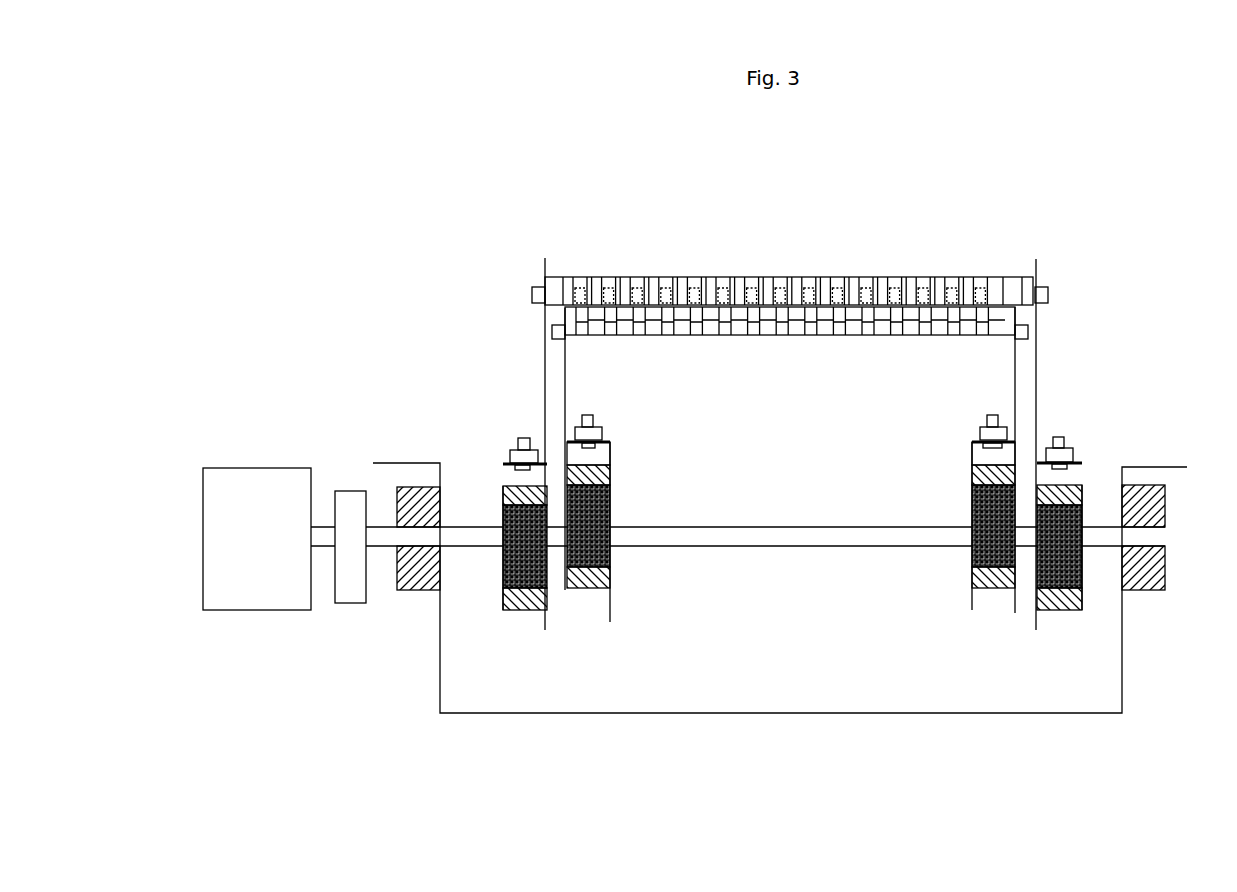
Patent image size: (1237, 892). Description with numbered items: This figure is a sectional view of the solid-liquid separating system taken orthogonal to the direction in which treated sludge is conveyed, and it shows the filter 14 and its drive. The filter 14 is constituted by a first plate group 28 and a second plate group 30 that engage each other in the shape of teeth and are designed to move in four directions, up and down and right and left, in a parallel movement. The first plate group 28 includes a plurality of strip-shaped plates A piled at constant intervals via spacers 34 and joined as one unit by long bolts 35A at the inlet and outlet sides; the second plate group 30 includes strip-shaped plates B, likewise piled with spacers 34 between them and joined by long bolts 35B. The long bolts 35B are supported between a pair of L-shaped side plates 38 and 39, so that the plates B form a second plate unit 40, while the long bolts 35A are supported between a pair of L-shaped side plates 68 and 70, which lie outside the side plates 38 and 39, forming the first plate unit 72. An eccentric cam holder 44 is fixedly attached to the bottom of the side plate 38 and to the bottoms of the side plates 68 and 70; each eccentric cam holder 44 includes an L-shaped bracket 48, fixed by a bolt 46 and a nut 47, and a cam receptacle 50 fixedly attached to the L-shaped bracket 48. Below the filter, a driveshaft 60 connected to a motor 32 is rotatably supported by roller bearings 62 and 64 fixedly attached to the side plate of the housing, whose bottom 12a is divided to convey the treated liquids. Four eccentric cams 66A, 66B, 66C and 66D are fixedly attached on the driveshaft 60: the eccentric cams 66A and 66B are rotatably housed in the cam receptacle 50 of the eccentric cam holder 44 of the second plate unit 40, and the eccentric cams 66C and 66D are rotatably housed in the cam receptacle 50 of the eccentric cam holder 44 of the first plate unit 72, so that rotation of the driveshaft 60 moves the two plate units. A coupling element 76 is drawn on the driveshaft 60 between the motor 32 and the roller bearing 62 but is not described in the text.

The bottom 12a is at (817, 715).
The filter 14 is at (946, 252).
The first plate group 28 is at (789, 290).
The second plate group 30 is at (790, 364).
The motor 32 is at (257, 468).
The spacer 34 is at (620, 277).
The long bolt 35A is at (1048, 294).
The long bolt 35B is at (1028, 332).
The L-shaped side plate 38 is at (565, 385).
The L-shaped side plate 39 is at (1037, 385).
The second plate unit 40 is at (556, 351).
The eccentric cam holder 44 is at (500, 507).
The bolt 46 is at (524, 438).
The nut 47 is at (510, 456).
The L-shaped bracket 48 is at (610, 452).
The cam receptacle 50 is at (522, 612).
The driveshaft 60 is at (803, 548).
The roller bearing 62 is at (415, 592).
The roller bearing 64 is at (1166, 512).
The eccentric cam 66A is at (612, 512).
The eccentric cam 66B is at (972, 515).
The eccentric cam 66C is at (505, 570).
The eccentric cam 66D is at (1080, 575).
The L-shaped side plate 68 is at (545, 357).
The L-shaped side plate 70 is at (1037, 355).
The first plate unit 72 is at (540, 397).
The coupling 76 is at (352, 491).
The strip-shaped plate A is at (737, 277).
The strip-shaped plate B is at (747, 337).